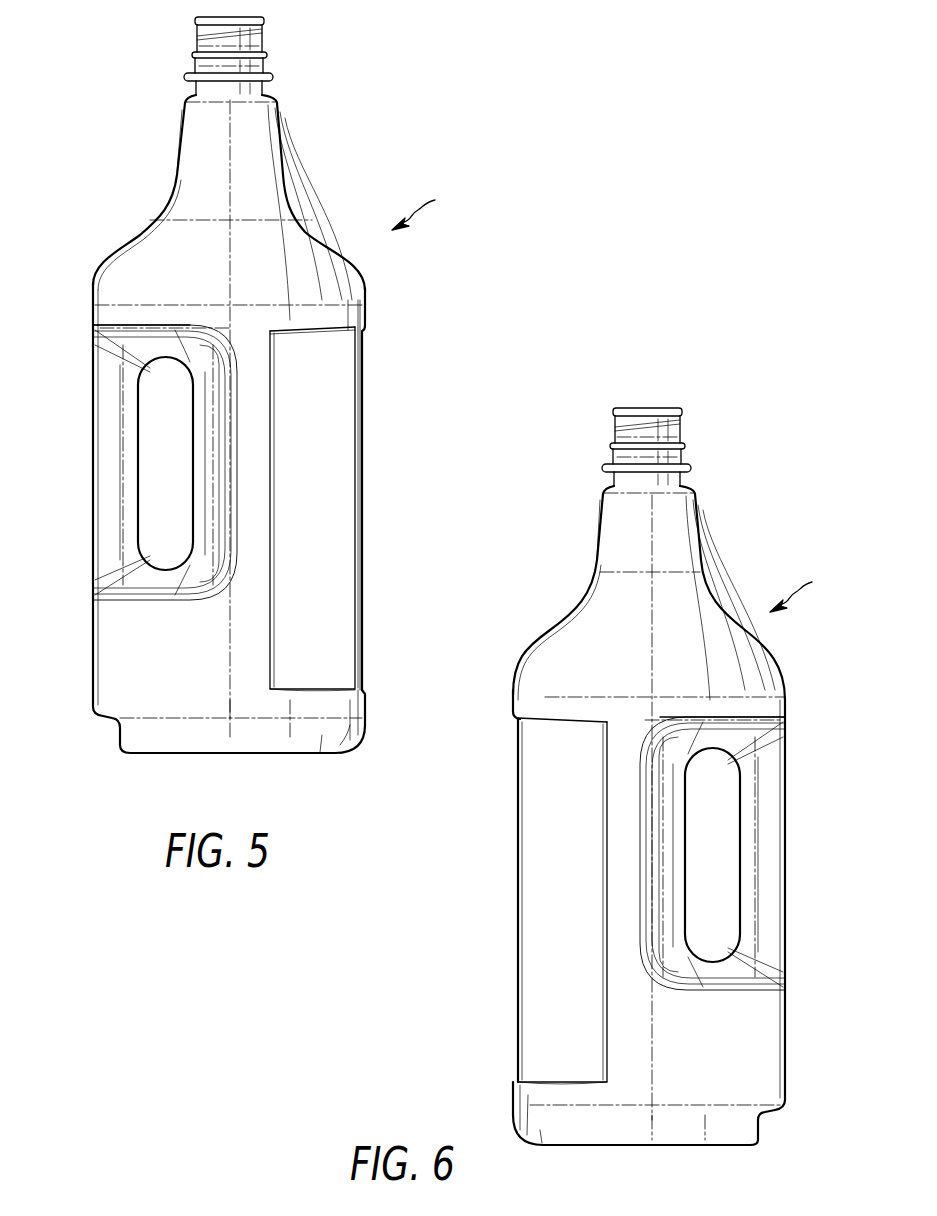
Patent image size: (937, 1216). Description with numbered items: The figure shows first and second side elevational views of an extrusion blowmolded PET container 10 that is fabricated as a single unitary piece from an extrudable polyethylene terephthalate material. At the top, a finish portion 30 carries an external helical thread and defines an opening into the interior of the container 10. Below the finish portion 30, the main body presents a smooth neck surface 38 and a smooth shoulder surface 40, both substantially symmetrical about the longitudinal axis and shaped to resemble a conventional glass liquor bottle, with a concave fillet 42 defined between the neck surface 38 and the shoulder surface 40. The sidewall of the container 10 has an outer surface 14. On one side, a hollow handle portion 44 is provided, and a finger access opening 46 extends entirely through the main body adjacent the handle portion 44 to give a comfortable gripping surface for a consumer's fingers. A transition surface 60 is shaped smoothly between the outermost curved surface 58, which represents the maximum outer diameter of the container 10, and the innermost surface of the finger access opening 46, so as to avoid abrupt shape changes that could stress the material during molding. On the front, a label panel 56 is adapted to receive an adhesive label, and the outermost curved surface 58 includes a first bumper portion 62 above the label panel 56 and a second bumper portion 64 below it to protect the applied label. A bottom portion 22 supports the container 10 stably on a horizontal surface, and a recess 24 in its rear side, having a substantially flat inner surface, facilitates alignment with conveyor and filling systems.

In FIG. 5, the container 10 is at (427, 208).
In FIG. 6, the container 10 is at (803, 589).
In FIG. 5, the outer surface 14 is at (134, 287).
In FIG. 5, the bottom portion 22 is at (150, 755).
In FIG. 6, the bottom portion 22 is at (700, 1148).
In FIG. 5, the recess 24 is at (117, 721).
In FIG. 6, the recess 24 is at (762, 1117).
In FIG. 5, the finish portion 30 is at (192, 52).
In FIG. 6, the finish portion 30 is at (684, 446).
In FIG. 5, the neck surface 38 is at (178, 147).
In FIG. 6, the neck surface 38 is at (700, 523).
In FIG. 5, the shoulder surface 40 is at (132, 234).
In FIG. 6, the shoulder surface 40 is at (565, 628).
In FIG. 5, the concave fillet 42 is at (290, 200).
In FIG. 6, the concave fillet 42 is at (708, 594).
In FIG. 5, the handle portion 44 is at (112, 446).
In FIG. 6, the handle portion 44 is at (765, 822).
In FIG. 5, the finger access opening 46 is at (160, 491).
In FIG. 6, the finger access opening 46 is at (720, 891).
In FIG. 5, the label panel 56 is at (338, 486).
In FIG. 6, the label panel 56 is at (537, 843).
In FIG. 5, the outermost curved surface 58 is at (258, 397).
In FIG. 6, the outermost curved surface 58 is at (605, 774).
In FIG. 5, the transition surface 60 is at (200, 497).
In FIG. 6, the transition surface 60 is at (665, 865).
In FIG. 5, the first bumper portion 62 is at (362, 314).
In FIG. 6, the first bumper portion 62 is at (508, 706).
In FIG. 5, the second bumper portion 64 is at (367, 706).
In FIG. 6, the second bumper portion 64 is at (514, 1092).